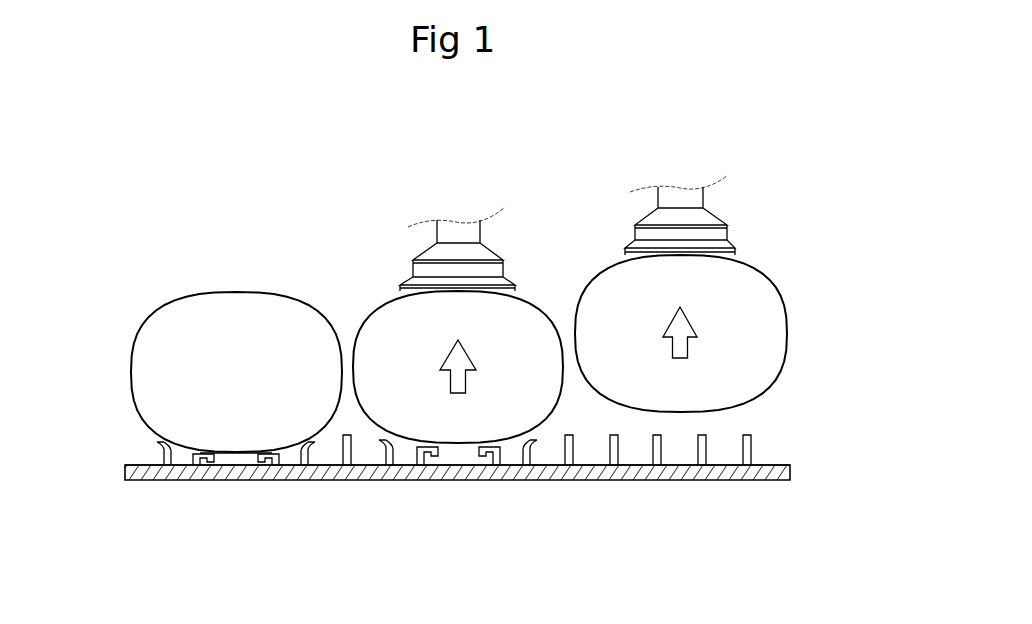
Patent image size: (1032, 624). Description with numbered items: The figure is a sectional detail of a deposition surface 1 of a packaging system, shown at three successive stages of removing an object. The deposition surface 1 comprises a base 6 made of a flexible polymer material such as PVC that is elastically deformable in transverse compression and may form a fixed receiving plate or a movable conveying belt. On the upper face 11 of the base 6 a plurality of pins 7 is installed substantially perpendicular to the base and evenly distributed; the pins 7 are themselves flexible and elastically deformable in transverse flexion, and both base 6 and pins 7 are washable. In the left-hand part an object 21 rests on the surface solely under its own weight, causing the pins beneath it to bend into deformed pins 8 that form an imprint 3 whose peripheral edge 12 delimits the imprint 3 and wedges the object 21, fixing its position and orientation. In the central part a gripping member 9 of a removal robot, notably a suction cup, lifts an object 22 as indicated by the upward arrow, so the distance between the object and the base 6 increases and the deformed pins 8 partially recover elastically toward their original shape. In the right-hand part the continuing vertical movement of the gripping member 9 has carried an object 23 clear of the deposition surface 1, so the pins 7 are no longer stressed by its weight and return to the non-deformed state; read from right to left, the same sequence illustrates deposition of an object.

The deposition surface 1 is at (805, 467).
The imprint 3 is at (238, 455).
The base 6 is at (788, 480).
The pins 7 is at (750, 437).
The deformed pins 8 is at (198, 467).
The gripping member 9 is at (458, 227).
The upper face 11 is at (770, 463).
The peripheral edge 12 is at (147, 442).
The object 21 is at (217, 308).
The object 22 is at (393, 308).
The object 23 is at (760, 280).